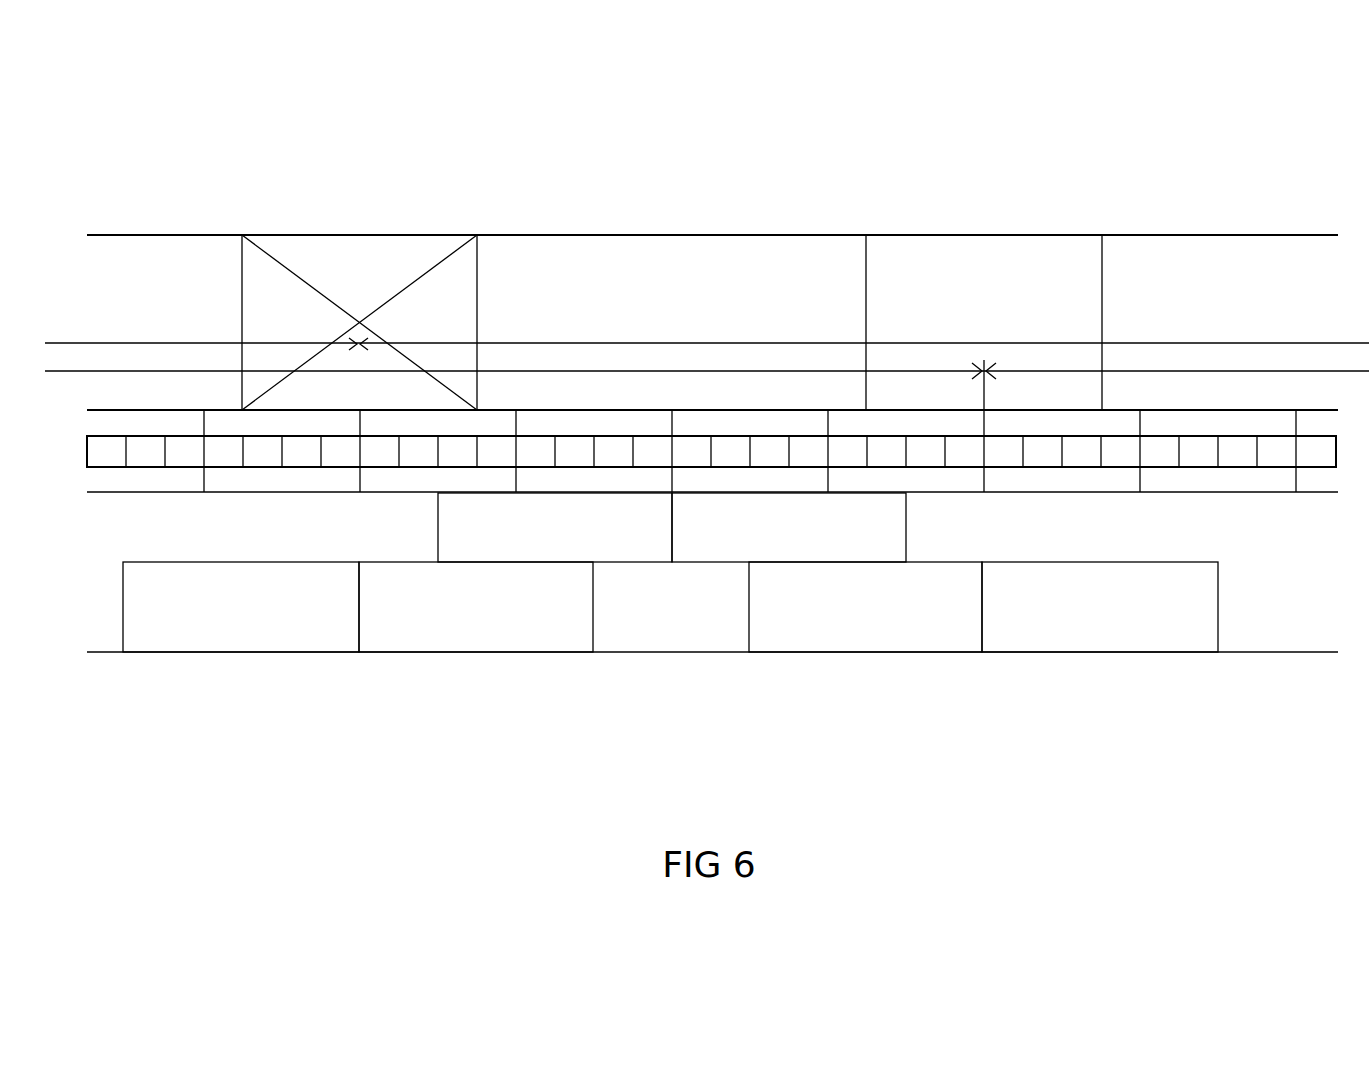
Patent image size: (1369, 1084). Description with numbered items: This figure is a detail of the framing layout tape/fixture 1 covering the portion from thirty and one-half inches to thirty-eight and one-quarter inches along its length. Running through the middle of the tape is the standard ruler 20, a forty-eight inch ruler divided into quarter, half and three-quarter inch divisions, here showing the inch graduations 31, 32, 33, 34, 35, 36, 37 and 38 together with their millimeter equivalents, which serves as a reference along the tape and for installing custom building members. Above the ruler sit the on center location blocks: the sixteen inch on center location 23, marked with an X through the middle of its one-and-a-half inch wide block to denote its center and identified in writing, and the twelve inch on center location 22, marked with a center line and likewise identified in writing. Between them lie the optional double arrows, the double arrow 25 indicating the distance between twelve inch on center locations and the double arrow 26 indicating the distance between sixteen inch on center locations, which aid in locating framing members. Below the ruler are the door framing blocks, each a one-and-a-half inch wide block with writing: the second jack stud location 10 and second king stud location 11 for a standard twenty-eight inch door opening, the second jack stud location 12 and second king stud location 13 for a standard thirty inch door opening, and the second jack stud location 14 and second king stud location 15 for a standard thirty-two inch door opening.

The framing layout tape/fixture 1 is at (604, 236).
The location of the 2nd jack stud for 28 inch door 10 is at (222, 653).
The location of the 2nd king stud for 28 inch door 11 is at (452, 653).
The location of the 2nd jack stud for 30 inch door 12 is at (630, 563).
The location of the 2nd king stud for 30 inch door 13 is at (723, 563).
The location of the 2nd jack stud for 32 inch door 14 is at (842, 653).
The location of the 2nd king stud for 32 inch door 15 is at (1050, 653).
The standard ruler 20 is at (712, 575).
The 12 inch on center location 22 is at (1013, 236).
The 16 inch on center location 23 is at (363, 236).
The double arrow for 12 inch on center distance 25 is at (632, 372).
The double arrow for 16 inch on center distance 26 is at (712, 350).
The inch graduation 31 is at (149, 451).
The inch graduation 32 is at (285, 451).
The inch graduation 33 is at (441, 451).
The inch graduation 34 is at (597, 451).
The inch graduation 35 is at (753, 451).
The inch graduation 36 is at (909, 451).
The inch graduation 37 is at (1065, 451).
The inch graduation 38 is at (1278, 468).